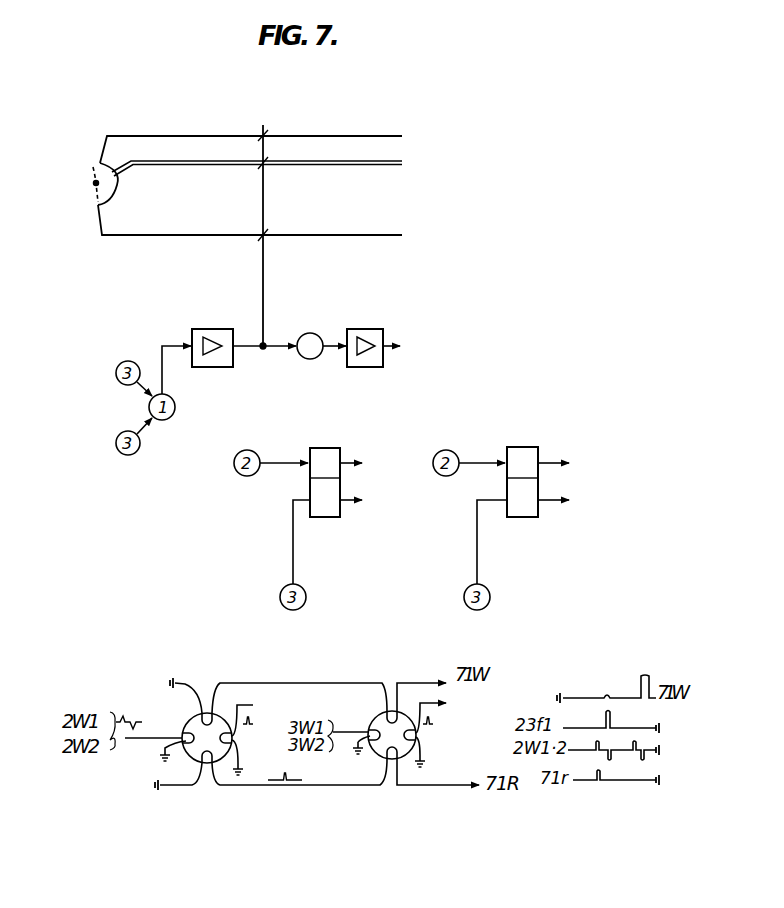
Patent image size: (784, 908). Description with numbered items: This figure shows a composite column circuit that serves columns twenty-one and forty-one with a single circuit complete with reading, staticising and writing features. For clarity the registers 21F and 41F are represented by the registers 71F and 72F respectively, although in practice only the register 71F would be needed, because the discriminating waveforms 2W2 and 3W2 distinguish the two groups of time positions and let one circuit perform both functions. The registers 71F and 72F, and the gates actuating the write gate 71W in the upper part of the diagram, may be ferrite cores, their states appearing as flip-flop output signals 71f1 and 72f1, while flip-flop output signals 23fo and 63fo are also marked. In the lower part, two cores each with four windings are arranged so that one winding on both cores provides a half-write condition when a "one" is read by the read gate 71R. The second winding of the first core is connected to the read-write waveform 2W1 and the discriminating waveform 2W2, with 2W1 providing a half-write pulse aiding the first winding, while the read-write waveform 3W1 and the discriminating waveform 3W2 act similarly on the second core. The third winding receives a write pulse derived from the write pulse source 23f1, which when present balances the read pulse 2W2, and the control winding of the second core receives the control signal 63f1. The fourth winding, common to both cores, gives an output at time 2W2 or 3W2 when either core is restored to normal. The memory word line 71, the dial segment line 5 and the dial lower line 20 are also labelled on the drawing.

The memory word line 71 is at (265, 220).
The dial segment line 5 is at (257, 168).
The dial lower line 20 is at (237, 190).
The write gate 71W is at (213, 331).
The read gate 71R is at (373, 331).
The read-write waveform 2W1 is at (302, 333).
The read-write waveform 3W1 is at (320, 333).
The discriminating waveform 2W2 is at (115, 382).
The discriminating waveform 3W2 is at (120, 456).
The flip-flop output signal 71f1 is at (115, 366).
The flip-flop output signal 72f1 is at (115, 437).
The flip-flop output signal 23fo is at (115, 372).
The flip-flop output signal 63fo is at (116, 447).
The register 71F is at (336, 463).
The register 72F is at (538, 463).
The register 21F is at (323, 399).
The register 41F is at (525, 399).
The write pulse source 23f1 is at (272, 699).
The control signal 63f1 is at (473, 703).